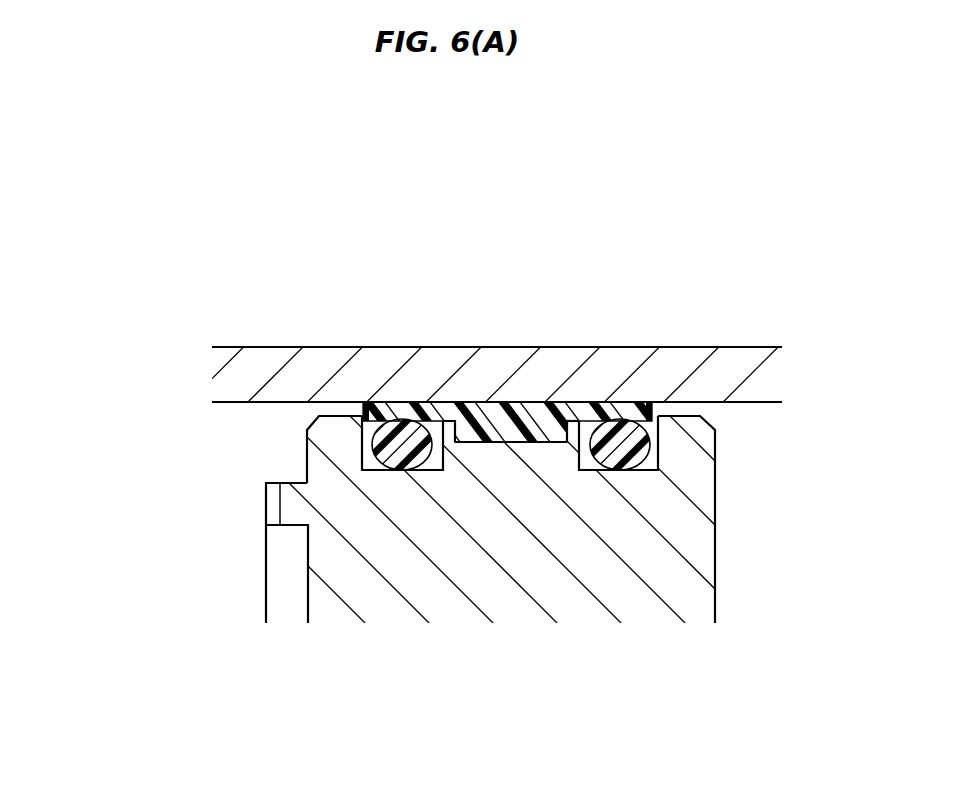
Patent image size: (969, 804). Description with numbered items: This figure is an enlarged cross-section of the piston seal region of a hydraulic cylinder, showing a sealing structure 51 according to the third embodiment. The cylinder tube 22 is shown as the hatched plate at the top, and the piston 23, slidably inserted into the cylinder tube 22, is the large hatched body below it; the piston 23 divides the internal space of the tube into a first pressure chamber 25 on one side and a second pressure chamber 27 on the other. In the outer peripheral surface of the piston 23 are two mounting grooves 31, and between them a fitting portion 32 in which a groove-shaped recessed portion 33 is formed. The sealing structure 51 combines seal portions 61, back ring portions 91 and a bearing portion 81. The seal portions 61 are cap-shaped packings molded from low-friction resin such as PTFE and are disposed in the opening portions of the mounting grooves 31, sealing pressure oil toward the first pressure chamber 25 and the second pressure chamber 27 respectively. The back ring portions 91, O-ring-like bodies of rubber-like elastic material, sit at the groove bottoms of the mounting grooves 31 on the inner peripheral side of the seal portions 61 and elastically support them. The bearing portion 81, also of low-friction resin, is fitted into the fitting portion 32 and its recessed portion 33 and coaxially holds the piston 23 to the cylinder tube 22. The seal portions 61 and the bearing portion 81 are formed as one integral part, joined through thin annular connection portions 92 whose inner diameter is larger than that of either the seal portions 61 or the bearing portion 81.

The cylinder tube 22 is at (233, 374).
The piston 23 is at (330, 590).
The first pressure chamber 25 is at (154, 538).
The second pressure chamber 27 is at (824, 538).
The mounting grooves 31 is at (433, 470).
The fitting portion 32 is at (506, 448).
The groove-shaped recessed portion 33 is at (557, 448).
The sealing structure 51 is at (352, 402).
The seal portions 61 is at (390, 418).
The bearing portion 81 is at (503, 424).
The back ring portions 91 is at (501, 332).
The connection portions 92 is at (448, 407).